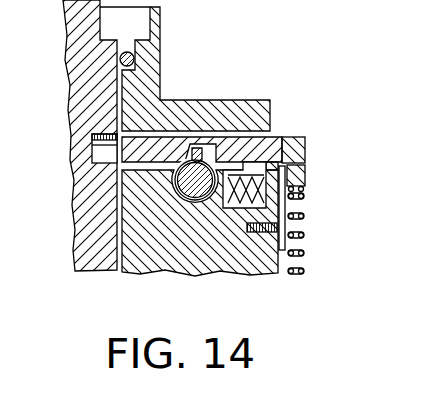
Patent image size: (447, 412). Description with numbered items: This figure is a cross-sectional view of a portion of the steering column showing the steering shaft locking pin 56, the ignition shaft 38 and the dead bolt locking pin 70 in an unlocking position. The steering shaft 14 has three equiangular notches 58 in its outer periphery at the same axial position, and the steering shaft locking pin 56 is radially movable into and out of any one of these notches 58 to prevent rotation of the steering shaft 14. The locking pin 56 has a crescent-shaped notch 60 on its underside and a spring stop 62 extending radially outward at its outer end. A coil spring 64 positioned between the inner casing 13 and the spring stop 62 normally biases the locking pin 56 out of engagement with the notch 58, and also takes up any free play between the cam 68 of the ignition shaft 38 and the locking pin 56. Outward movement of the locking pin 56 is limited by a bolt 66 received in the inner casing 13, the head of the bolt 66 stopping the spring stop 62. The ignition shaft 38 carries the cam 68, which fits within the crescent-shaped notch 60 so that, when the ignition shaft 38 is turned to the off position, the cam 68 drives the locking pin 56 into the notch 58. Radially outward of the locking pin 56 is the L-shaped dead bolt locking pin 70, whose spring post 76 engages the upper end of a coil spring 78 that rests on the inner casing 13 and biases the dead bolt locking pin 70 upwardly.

The inner casing 13 is at (137, 252).
The steering shaft 14 is at (80, 115).
The ignition shaft 38 is at (186, 201).
The steering shaft locking pin 56 is at (152, 146).
The notch 58 is at (100, 160).
The crescent-shaped notch 60 is at (214, 166).
The spring stop 62 is at (283, 160).
The coil spring 64 is at (249, 168).
The bolt 66 is at (281, 226).
The cam 68 is at (198, 146).
The dead bolt locking pin 70 is at (304, 176).
The spring post 76 is at (301, 196).
The coil spring 78 is at (304, 274).